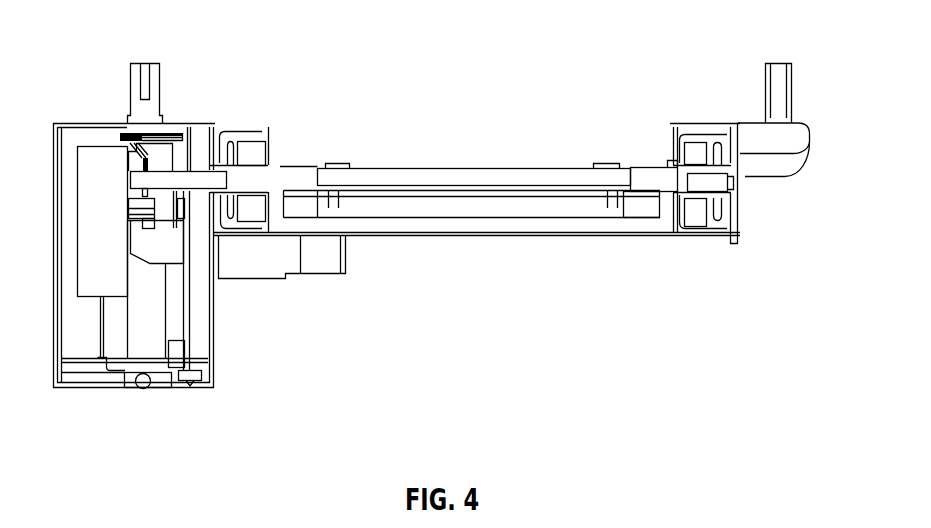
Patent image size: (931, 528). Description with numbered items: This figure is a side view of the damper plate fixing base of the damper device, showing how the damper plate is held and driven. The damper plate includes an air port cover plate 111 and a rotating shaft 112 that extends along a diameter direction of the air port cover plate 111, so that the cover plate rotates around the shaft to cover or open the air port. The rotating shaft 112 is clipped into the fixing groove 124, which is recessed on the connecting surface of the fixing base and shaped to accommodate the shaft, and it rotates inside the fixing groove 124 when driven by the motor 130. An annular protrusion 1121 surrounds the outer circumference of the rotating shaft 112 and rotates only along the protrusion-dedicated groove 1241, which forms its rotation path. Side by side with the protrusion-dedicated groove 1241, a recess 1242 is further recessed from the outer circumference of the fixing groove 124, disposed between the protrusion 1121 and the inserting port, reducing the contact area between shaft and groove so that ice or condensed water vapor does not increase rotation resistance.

The motor 130 is at (98, 181).
The air port cover plate 111 is at (413, 180).
The fixing groove 124 is at (732, 166).
The protrusion 1121 is at (738, 198).
The rotating shaft 112 is at (670, 180).
The recess 1242 is at (693, 216).
The protrusion-dedicated groove 1241 is at (722, 218).